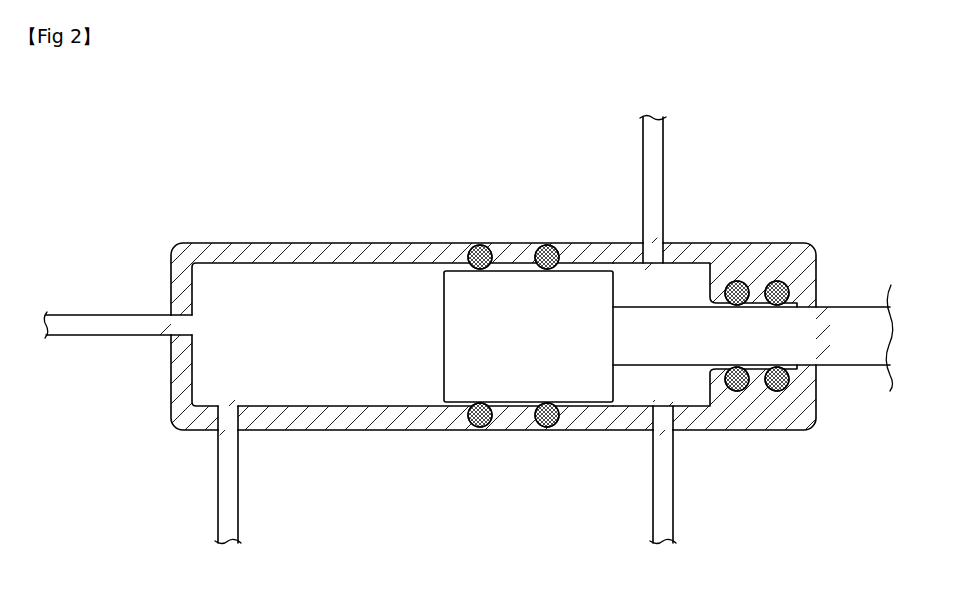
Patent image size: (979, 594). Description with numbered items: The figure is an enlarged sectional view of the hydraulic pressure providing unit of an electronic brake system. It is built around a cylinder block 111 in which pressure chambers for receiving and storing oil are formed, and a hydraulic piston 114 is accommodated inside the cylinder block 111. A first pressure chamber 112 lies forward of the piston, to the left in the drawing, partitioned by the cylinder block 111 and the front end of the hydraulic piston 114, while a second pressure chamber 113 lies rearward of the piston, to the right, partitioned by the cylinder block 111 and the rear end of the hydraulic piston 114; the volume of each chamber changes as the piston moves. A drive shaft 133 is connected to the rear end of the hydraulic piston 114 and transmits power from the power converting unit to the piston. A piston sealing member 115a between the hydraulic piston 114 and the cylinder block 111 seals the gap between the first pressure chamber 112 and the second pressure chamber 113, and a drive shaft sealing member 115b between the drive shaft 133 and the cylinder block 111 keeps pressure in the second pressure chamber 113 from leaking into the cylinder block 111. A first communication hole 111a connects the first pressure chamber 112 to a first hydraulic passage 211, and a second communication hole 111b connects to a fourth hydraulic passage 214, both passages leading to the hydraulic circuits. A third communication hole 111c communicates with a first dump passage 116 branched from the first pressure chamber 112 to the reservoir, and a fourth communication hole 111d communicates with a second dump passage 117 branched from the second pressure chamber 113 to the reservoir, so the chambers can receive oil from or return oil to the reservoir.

The cylinder block 111 is at (172, 377).
The first communication hole 111a is at (228, 425).
The second communication hole 111b is at (662, 423).
The third communication hole 111c is at (184, 320).
The fourth communication hole 111d is at (663, 241).
The first pressure chamber 112 is at (357, 282).
The second pressure chamber 113 is at (683, 383).
The hydraulic piston 114 is at (590, 285).
The piston sealing member 115a is at (480, 246).
The drive shaft sealing member 115b is at (777, 282).
The first dump passage 116 is at (94, 322).
The second dump passage 117 is at (663, 145).
The drive shaft 133 is at (852, 318).
The first hydraulic passage 211 is at (218, 515).
The fourth hydraulic passage 214 is at (654, 515).